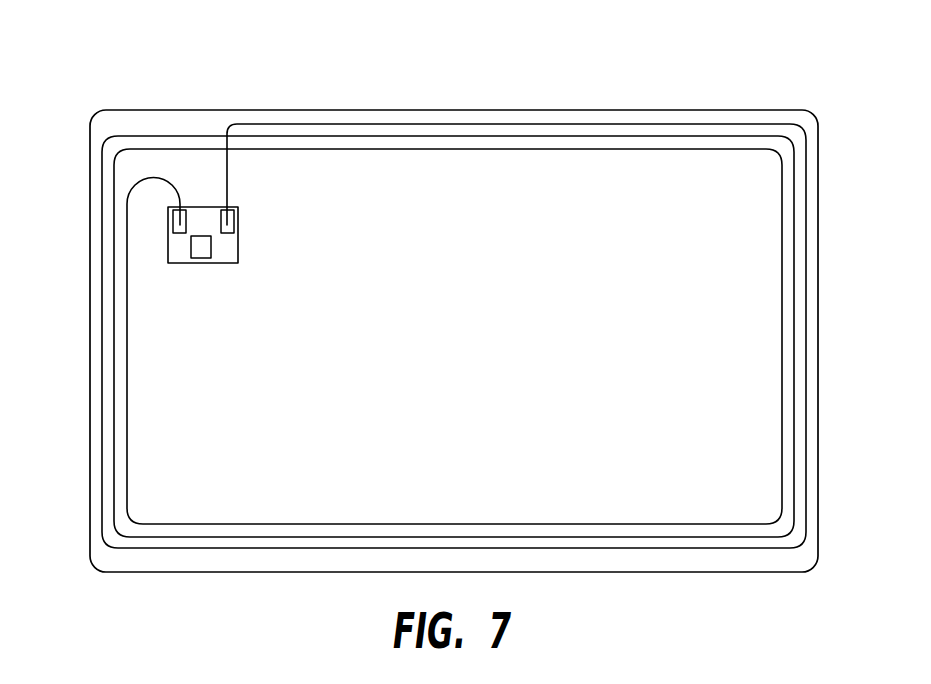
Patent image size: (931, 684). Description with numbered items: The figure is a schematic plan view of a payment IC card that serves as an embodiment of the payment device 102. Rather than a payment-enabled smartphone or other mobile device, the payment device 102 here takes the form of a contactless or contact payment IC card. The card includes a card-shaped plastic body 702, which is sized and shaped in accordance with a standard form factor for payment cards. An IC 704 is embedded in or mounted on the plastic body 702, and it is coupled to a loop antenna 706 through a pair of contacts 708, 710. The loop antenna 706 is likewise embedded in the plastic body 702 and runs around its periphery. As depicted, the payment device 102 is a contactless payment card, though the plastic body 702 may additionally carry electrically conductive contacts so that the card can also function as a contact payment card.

The payment device 102 is at (643, 77).
The card-shaped plastic body 702 is at (460, 176).
The IC 704 is at (171, 207).
The loop antenna 706 is at (748, 125).
The contact 708 is at (173, 218).
The contact 710 is at (236, 221).